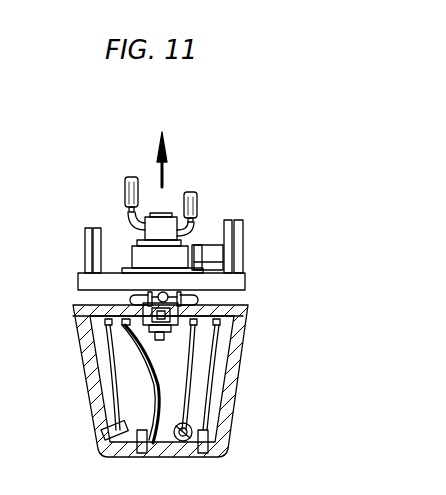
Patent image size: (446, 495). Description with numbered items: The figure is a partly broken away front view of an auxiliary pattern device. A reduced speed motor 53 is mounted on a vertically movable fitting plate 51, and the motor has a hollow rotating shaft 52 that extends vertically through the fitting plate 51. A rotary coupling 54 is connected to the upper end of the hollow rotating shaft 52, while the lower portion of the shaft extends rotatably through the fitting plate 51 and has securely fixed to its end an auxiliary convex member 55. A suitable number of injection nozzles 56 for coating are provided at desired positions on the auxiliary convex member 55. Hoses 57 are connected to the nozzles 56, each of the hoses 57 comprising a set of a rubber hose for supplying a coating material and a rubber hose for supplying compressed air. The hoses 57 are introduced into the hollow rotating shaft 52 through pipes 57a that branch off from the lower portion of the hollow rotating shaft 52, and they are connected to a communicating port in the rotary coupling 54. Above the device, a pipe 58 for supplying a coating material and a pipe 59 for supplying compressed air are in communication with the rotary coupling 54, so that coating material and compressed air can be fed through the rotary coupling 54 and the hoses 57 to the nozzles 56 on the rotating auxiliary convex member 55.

The fitting plate 51 is at (245, 280).
The hollow rotating shaft 52 is at (164, 292).
The reduced speed motor 53 is at (135, 253).
The rotary coupling 54 is at (168, 223).
The auxiliary convex member 55 is at (240, 362).
The injection nozzles 56 is at (140, 432).
The hoses 57 is at (188, 380).
The pipes 57a is at (200, 298).
The pipe for supplying a coating material 58 is at (198, 208).
The pipe for supplying compressed air 59 is at (127, 190).